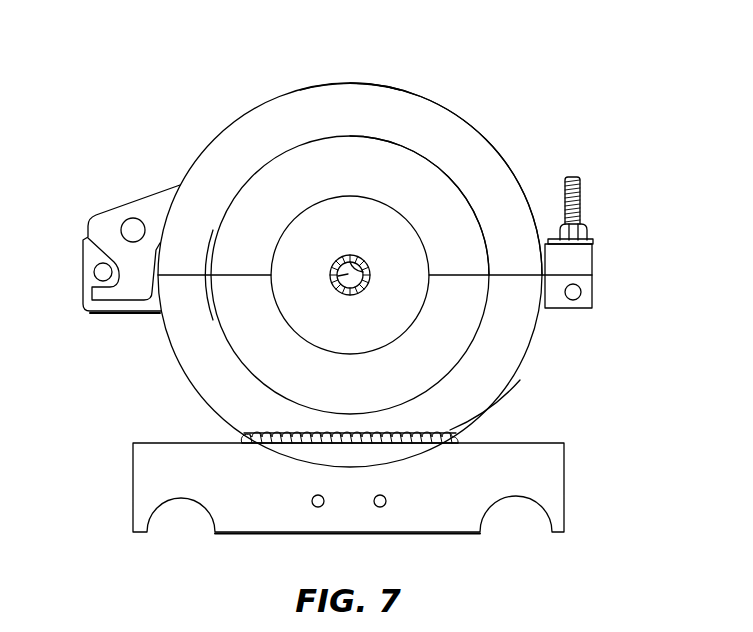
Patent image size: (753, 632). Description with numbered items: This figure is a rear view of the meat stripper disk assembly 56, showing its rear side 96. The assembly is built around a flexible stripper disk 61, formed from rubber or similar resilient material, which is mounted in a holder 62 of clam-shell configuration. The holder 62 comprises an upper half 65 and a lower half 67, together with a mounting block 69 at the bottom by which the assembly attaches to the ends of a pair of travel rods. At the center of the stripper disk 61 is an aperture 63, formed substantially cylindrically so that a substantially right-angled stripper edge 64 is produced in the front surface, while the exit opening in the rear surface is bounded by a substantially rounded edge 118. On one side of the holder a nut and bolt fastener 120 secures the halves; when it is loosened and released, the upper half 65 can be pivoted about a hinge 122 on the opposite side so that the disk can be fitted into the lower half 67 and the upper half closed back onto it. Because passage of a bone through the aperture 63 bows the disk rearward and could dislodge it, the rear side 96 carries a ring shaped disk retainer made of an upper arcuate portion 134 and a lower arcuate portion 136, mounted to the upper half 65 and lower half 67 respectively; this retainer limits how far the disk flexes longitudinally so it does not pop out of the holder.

The meat stripper disk assembly 56 is at (466, 64).
The stripper disk holder 62 is at (209, 107).
The rear side 96 is at (481, 111).
The upper half 65 is at (487, 160).
The upper arcuate portion 134 is at (347, 148).
The lower arcuate portion 136 is at (234, 322).
The lower half 67 is at (482, 380).
The stripper disk 61 is at (313, 232).
The stripper edge 64 is at (350, 258).
The aperture 63 is at (337, 289).
The rounded edge 118 is at (368, 284).
The hinge 122 is at (96, 194).
The nut and bolt fastener 120 is at (606, 213).
The mounting block 69 is at (183, 458).